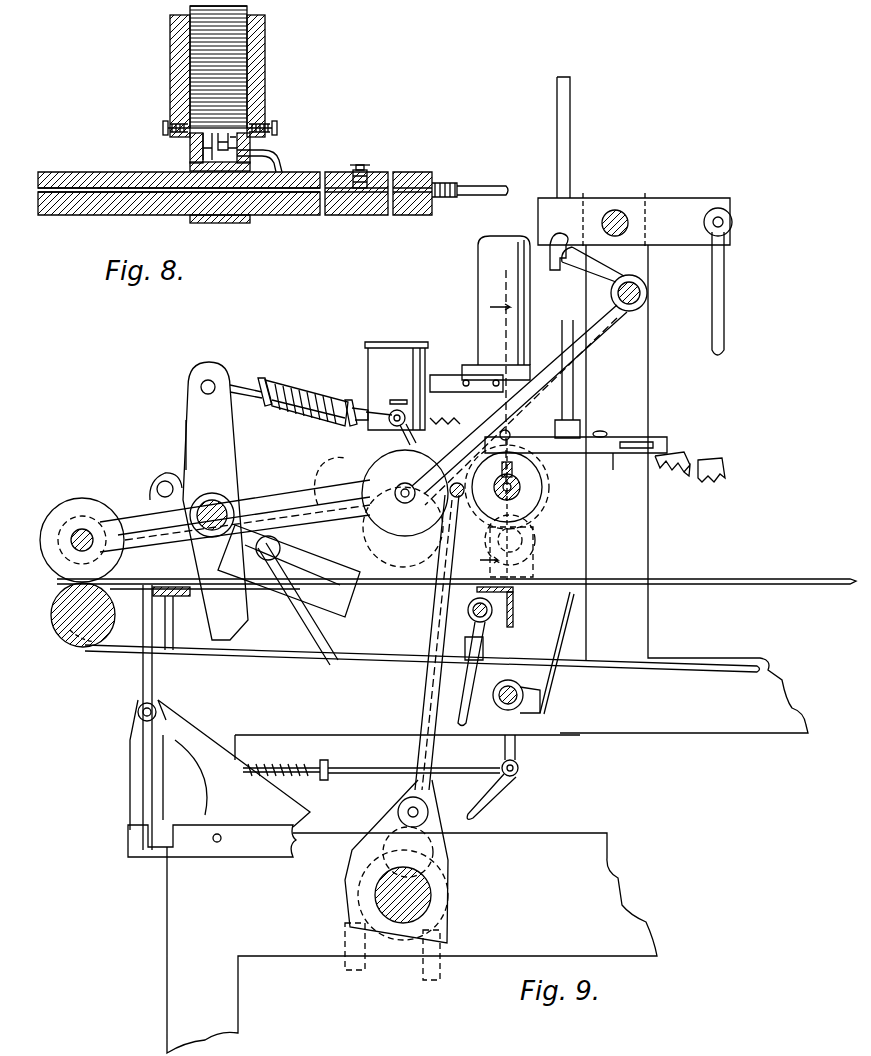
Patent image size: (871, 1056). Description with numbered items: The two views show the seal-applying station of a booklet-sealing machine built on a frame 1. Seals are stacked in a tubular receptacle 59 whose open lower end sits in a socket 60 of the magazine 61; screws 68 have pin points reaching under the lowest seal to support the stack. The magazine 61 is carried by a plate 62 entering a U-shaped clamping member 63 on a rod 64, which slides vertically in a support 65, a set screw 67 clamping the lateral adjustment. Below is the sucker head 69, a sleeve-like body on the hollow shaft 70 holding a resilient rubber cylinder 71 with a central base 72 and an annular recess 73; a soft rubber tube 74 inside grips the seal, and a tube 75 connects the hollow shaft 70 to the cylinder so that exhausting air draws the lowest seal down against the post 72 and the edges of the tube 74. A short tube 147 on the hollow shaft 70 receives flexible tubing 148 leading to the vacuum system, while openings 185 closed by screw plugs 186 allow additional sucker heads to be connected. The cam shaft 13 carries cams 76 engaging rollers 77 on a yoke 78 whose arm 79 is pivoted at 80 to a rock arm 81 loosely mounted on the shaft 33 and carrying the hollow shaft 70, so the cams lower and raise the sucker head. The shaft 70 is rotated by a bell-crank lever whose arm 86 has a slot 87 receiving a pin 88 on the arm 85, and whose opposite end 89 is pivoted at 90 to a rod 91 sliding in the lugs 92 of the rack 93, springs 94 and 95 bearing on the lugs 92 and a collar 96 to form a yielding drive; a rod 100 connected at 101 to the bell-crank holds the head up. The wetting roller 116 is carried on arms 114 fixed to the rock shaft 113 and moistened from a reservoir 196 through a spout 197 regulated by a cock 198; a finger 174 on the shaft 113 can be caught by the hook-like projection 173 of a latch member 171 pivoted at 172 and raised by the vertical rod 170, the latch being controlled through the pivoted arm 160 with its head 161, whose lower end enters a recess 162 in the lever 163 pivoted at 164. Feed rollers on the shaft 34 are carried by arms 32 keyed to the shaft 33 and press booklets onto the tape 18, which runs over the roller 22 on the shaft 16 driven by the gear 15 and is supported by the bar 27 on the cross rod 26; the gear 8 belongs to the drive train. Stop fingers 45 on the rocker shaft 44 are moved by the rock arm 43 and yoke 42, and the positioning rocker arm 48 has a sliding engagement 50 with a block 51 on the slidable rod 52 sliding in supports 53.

In FIG. 8, the receptacle 59 is at (180, 15).
In FIG. 8, the socket 60 is at (265, 38).
In FIG. 8, the magazine 61 is at (266, 92).
In FIG. 8, the screws 68 is at (165, 120).
In FIG. 9, the screws 68 is at (500, 434).
In FIG. 8, the sucker head 69 is at (192, 150).
In FIG. 9, the sucker head 69 is at (542, 472).
In FIG. 8, the hollow shaft 70 is at (88, 214).
In FIG. 9, the hollow shaft 70 is at (540, 505).
In FIG. 8, the resilient cylinder 71 is at (200, 145).
In FIG. 9, the resilient cylinder 71 is at (532, 462).
In FIG. 8, the central base 72 is at (217, 145).
In FIG. 8, the annular recess 73 is at (240, 142).
In FIG. 8, the soft rubber tube 74 is at (238, 160).
In FIG. 8, the gear 15 is at (284, 165).
In FIG. 9, the gear 15 is at (452, 485).
In FIG. 8, the openings 185 is at (352, 170).
In FIG. 8, the screw plugs 186 is at (366, 164).
In FIG. 8, the short tube 147 is at (450, 182).
In FIG. 8, the flexible tubing 148 is at (496, 185).
In FIG. 9, the frame 1 is at (648, 532).
In FIG. 9, the gear 8 is at (504, 368).
In FIG. 9, the support 65 is at (575, 198).
In FIG. 9, the hook-like projection 173 is at (548, 238).
In FIG. 9, the pivot 172 is at (617, 212).
In FIG. 9, the latch member 171 is at (706, 200).
In FIG. 9, the vertically extending rod 170 is at (726, 316).
In FIG. 9, the rock shaft 113 is at (647, 293).
In FIG. 9, the finger 174 is at (598, 272).
In FIG. 9, the arms 114 is at (558, 360).
In FIG. 9, the rod 64 is at (575, 392).
In FIG. 9, the U-shaped clamping member 63 is at (668, 446).
In FIG. 9, the set screw 67 is at (603, 431).
In FIG. 9, the plate 62 is at (612, 458).
In FIG. 9, the rack 93 is at (700, 460).
In FIG. 9, the tube 75 is at (507, 487).
In FIG. 9, the reservoir 196 is at (418, 345).
In FIG. 9, the pivot connection 90 is at (190, 384).
In FIG. 9, the bell-crank lever end 89 is at (186, 433).
In FIG. 9, the rod 91 is at (236, 383).
In FIG. 9, the lugs 92 is at (264, 378).
In FIG. 9, the collar 96 is at (318, 402).
In FIG. 9, the spring 94 is at (290, 404).
In FIG. 9, the spring 95 is at (350, 420).
In FIG. 9, the cock 198 is at (376, 418).
In FIG. 9, the spout 197 is at (400, 426).
In FIG. 9, the wetting roller 116 is at (395, 488).
In FIG. 9, the rock arm 81 is at (325, 481).
In FIG. 9, the pivot connection 80 is at (440, 530).
In FIG. 9, the arm 32 is at (128, 520).
In FIG. 9, the shaft 33 is at (214, 498).
In FIG. 9, the connection 101 is at (155, 483).
In FIG. 9, the shaft 34 is at (92, 525).
In FIG. 9, the endless tape 18 is at (52, 615).
In FIG. 9, the supporting bar 27 is at (392, 588).
In FIG. 9, the shaft 16 is at (72, 643).
In FIG. 9, the roller 22 is at (82, 645).
In FIG. 9, the head 161 is at (160, 586).
In FIG. 9, the cross rod 26 is at (183, 596).
In FIG. 9, the rod 100 is at (165, 633).
In FIG. 9, the pivoted arm 160 is at (140, 778).
In FIG. 9, the recess 162 is at (138, 838).
In FIG. 9, the lever 163 is at (262, 846).
In FIG. 9, the pivot 164 is at (217, 843).
In FIG. 9, the bell-crank arm 86 is at (355, 575).
In FIG. 9, the slot 87 is at (330, 572).
In FIG. 9, the pin 88 is at (245, 555).
In FIG. 9, the arm 85 is at (325, 650).
In FIG. 9, the arm 79 is at (428, 632).
In FIG. 9, the roller 77 is at (428, 812).
In FIG. 9, the yoke 78 is at (448, 855).
In FIG. 9, the cams 76 is at (450, 890).
In FIG. 9, the cam shaft 13 is at (385, 903).
In FIG. 9, the supports 53 is at (513, 592).
In FIG. 9, the slidable rod 52 is at (513, 608).
In FIG. 9, the block 51 is at (507, 622).
In FIG. 9, the sliding engagement 50 is at (484, 645).
In FIG. 9, the rocker arm 48 is at (462, 700).
In FIG. 9, the fingers 45 is at (560, 636).
In FIG. 9, the rocker shaft 44 is at (502, 708).
In FIG. 9, the rock arm 43 is at (518, 758).
In FIG. 9, the yoke 42 is at (490, 795).